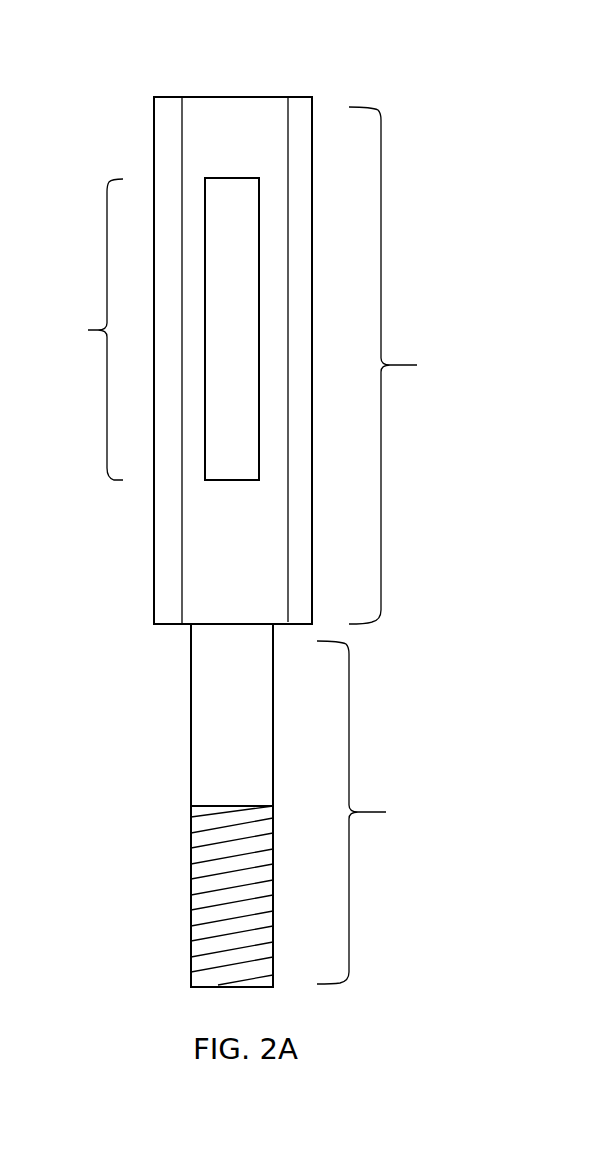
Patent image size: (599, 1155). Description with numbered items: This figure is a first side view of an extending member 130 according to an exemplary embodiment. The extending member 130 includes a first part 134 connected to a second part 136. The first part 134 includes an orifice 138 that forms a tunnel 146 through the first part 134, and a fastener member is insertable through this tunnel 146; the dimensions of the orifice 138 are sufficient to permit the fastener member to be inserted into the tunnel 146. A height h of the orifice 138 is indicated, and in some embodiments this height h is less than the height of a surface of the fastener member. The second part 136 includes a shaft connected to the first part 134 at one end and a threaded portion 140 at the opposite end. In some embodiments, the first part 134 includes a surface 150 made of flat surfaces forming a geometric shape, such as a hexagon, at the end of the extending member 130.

The extending member 130 is at (154, 140).
The surface 150 is at (232, 97).
The first part 134 is at (413, 365).
The second part 136 is at (327, 805).
The orifice 138 is at (228, 481).
The threaded portion 140 is at (191, 897).
The tunnel 146 is at (234, 358).
The height of the orifice h is at (84, 329).